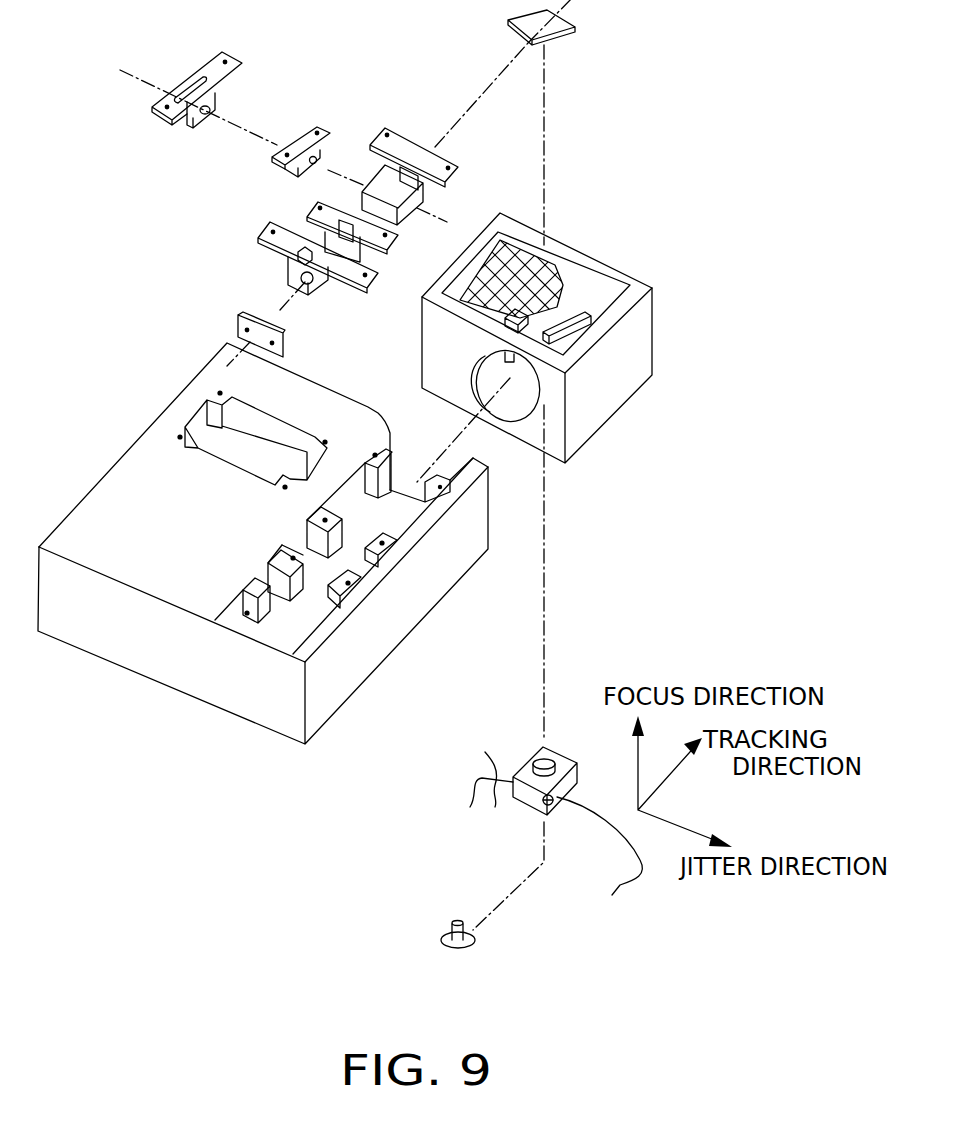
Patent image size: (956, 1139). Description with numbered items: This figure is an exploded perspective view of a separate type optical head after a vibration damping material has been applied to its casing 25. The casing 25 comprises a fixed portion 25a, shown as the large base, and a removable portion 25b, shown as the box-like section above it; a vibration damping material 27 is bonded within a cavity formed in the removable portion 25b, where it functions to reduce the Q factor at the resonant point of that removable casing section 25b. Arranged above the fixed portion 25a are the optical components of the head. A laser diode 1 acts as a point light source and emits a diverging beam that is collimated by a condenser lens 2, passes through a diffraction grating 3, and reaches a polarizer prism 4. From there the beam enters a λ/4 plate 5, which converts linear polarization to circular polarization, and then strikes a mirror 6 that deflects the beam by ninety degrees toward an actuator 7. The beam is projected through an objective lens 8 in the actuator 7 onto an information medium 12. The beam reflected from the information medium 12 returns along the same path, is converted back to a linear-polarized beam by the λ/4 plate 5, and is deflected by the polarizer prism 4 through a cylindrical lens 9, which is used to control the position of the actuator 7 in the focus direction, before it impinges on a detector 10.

The laser diode 1 is at (253, 313).
The condenser lens 2 is at (290, 277).
The diffraction grating 3 is at (335, 227).
The polarizer prism 4 is at (375, 172).
The λ/4 plate 5 is at (427, 198).
The mirror 6 is at (576, 30).
The actuator 7 is at (553, 752).
The objective lens 8 is at (567, 790).
The cylindrical lens 9 is at (327, 140).
The detector 10 is at (217, 99).
The information medium 12 is at (478, 768).
The casing 25 is at (600, 514).
The fixed portion 25a is at (288, 743).
The removable portion 25b is at (577, 331).
The vibration damping material 27 is at (543, 262).